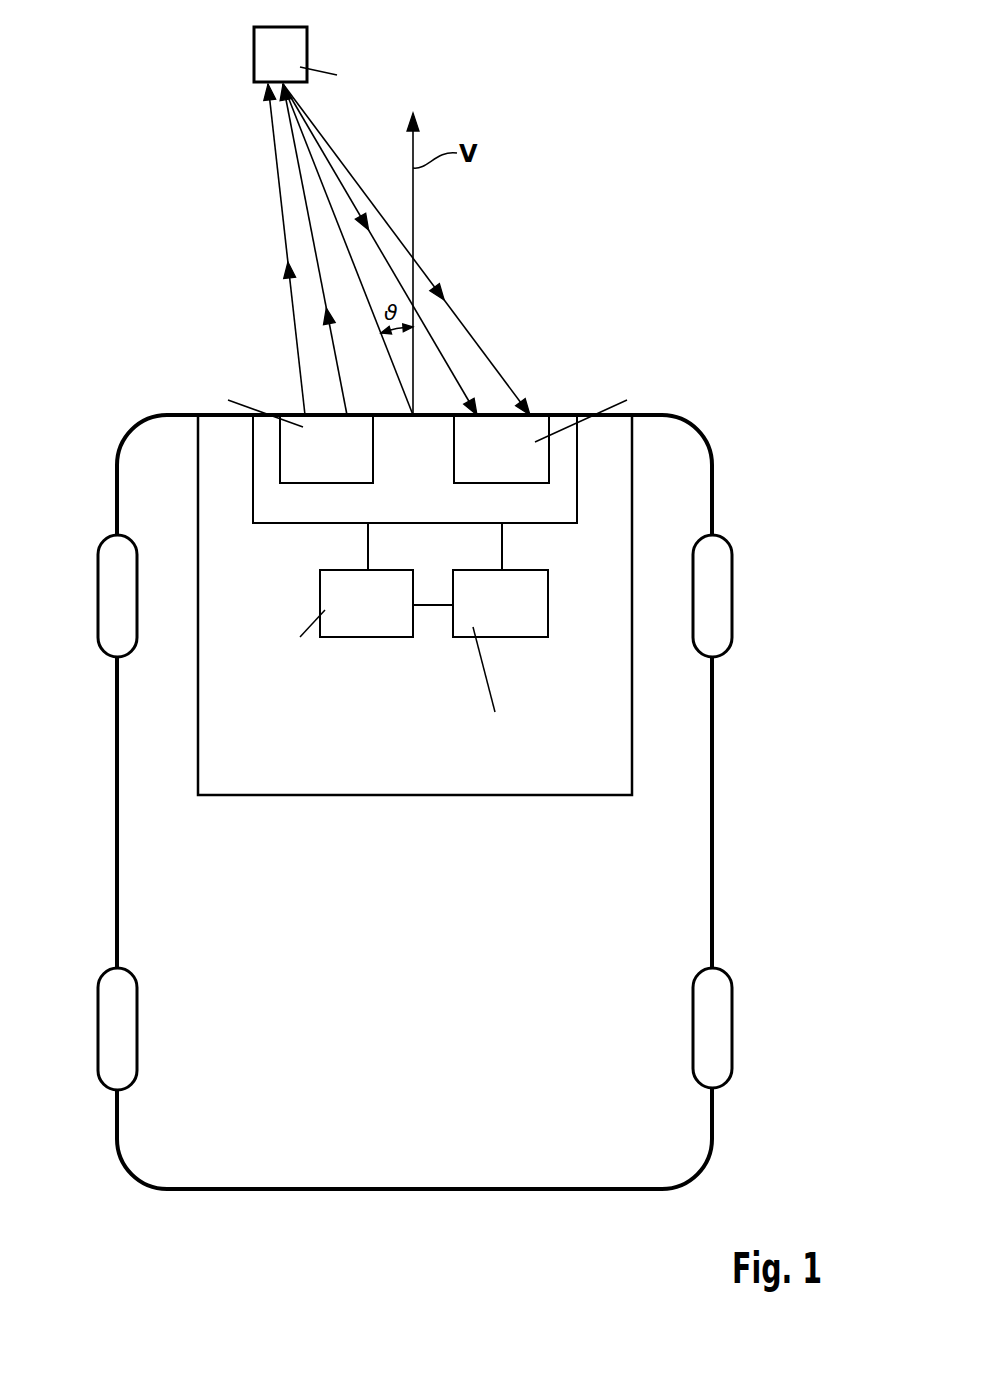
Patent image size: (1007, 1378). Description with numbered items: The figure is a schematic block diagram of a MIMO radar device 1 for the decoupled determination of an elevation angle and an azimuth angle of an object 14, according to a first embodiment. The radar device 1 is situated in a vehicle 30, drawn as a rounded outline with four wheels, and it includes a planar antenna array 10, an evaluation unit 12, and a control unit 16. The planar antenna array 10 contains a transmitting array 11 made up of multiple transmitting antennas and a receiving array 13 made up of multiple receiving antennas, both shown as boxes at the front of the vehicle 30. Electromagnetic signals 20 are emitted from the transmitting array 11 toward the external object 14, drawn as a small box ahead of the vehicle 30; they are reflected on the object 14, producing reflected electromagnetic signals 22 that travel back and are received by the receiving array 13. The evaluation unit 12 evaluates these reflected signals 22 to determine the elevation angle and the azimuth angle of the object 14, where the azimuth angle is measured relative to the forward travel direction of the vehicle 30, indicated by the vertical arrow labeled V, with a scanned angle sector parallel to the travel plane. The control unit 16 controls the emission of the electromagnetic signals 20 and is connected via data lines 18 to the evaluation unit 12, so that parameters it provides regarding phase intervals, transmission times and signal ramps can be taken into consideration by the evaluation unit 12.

The MIMO radar device 1 is at (432, 795).
The planar antenna array 10 is at (267, 525).
The transmitting array 11 is at (373, 445).
The evaluation unit 12 is at (345, 637).
The receiving array 13 is at (452, 477).
The object 14 is at (307, 55).
The control unit 16 is at (523, 637).
The data lines 18 is at (437, 605).
The electromagnetic signals 20 is at (278, 194).
The reflected electromagnetic signals 22 is at (457, 310).
The vehicle 30 is at (563, 1190).